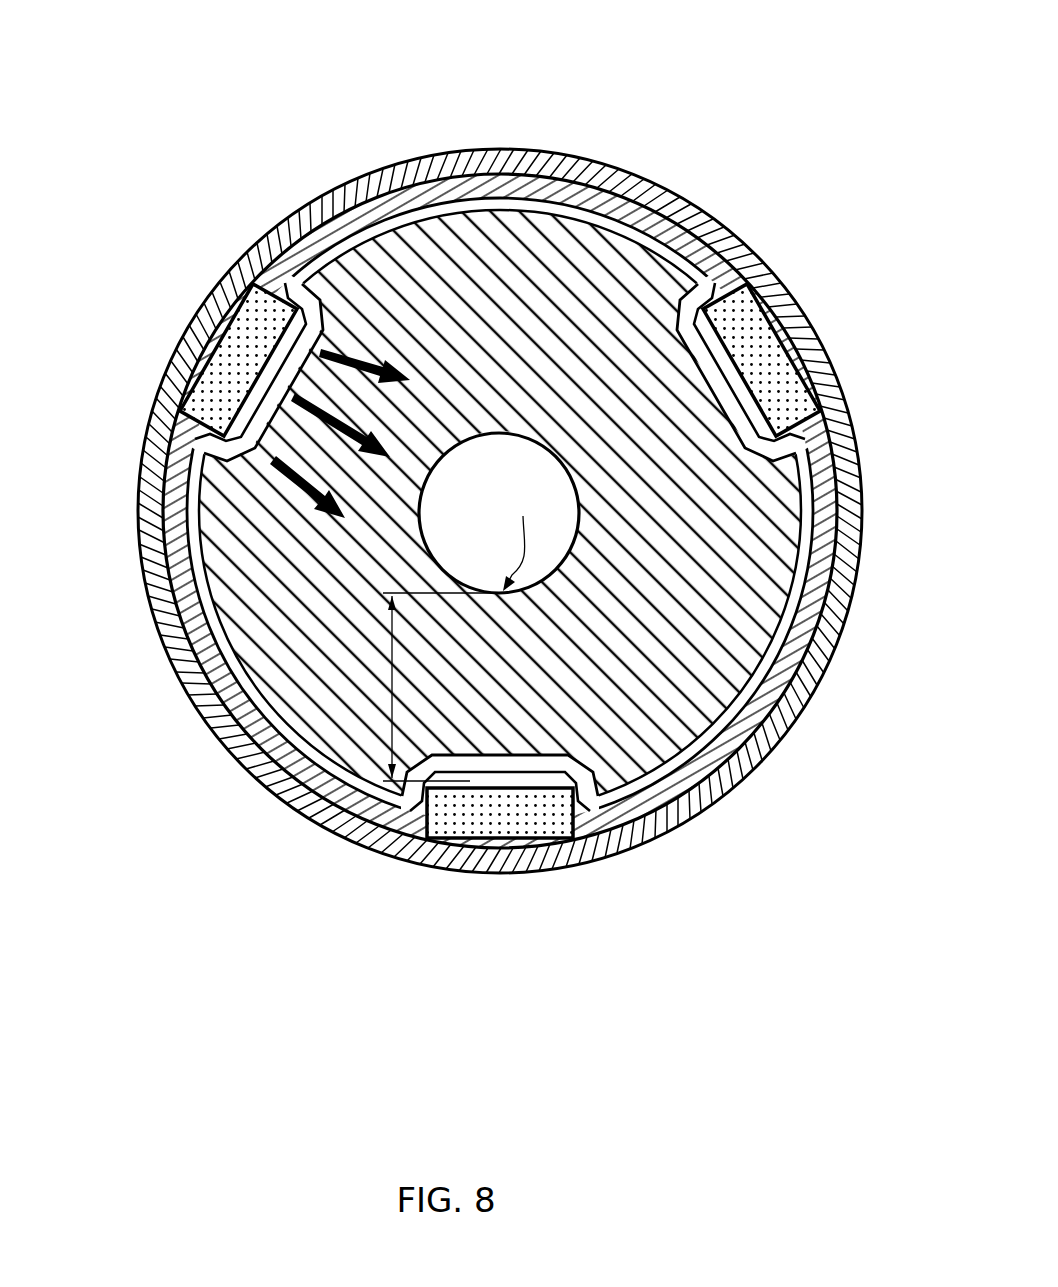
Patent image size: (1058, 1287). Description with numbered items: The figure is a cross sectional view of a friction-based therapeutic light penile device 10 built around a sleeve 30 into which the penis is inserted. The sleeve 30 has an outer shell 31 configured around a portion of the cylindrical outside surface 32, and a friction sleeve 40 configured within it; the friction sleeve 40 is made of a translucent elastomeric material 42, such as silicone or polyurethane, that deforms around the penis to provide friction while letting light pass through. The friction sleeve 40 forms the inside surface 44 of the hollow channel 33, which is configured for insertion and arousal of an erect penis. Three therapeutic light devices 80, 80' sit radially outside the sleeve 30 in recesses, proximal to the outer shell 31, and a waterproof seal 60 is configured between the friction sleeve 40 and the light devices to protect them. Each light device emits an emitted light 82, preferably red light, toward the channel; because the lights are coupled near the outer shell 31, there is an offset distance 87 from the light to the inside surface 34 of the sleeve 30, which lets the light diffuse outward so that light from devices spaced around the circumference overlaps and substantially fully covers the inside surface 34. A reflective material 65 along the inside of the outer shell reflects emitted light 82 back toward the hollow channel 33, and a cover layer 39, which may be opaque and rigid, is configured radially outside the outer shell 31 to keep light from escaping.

The friction-based therapeutic light penile device 10 is at (180, 158).
The sleeve 30 is at (585, 177).
The outer shell 31 is at (453, 473).
The outside surface 32 is at (502, 170).
The hollow channel 33 is at (495, 462).
The inside surface 34 is at (499, 513).
The cover layer 39 is at (421, 152).
The friction sleeve 40 is at (667, 287).
The elastomeric material 42 is at (755, 380).
The inside surface 44 is at (521, 539).
The waterproof seal 60 is at (805, 432).
The reflective material 65 is at (800, 565).
The therapeutic light device 80 is at (170, 360).
The therapeutic light device 80' is at (500, 885).
The emitted light 82 is at (300, 290).
The offset distance 87 is at (425, 687).